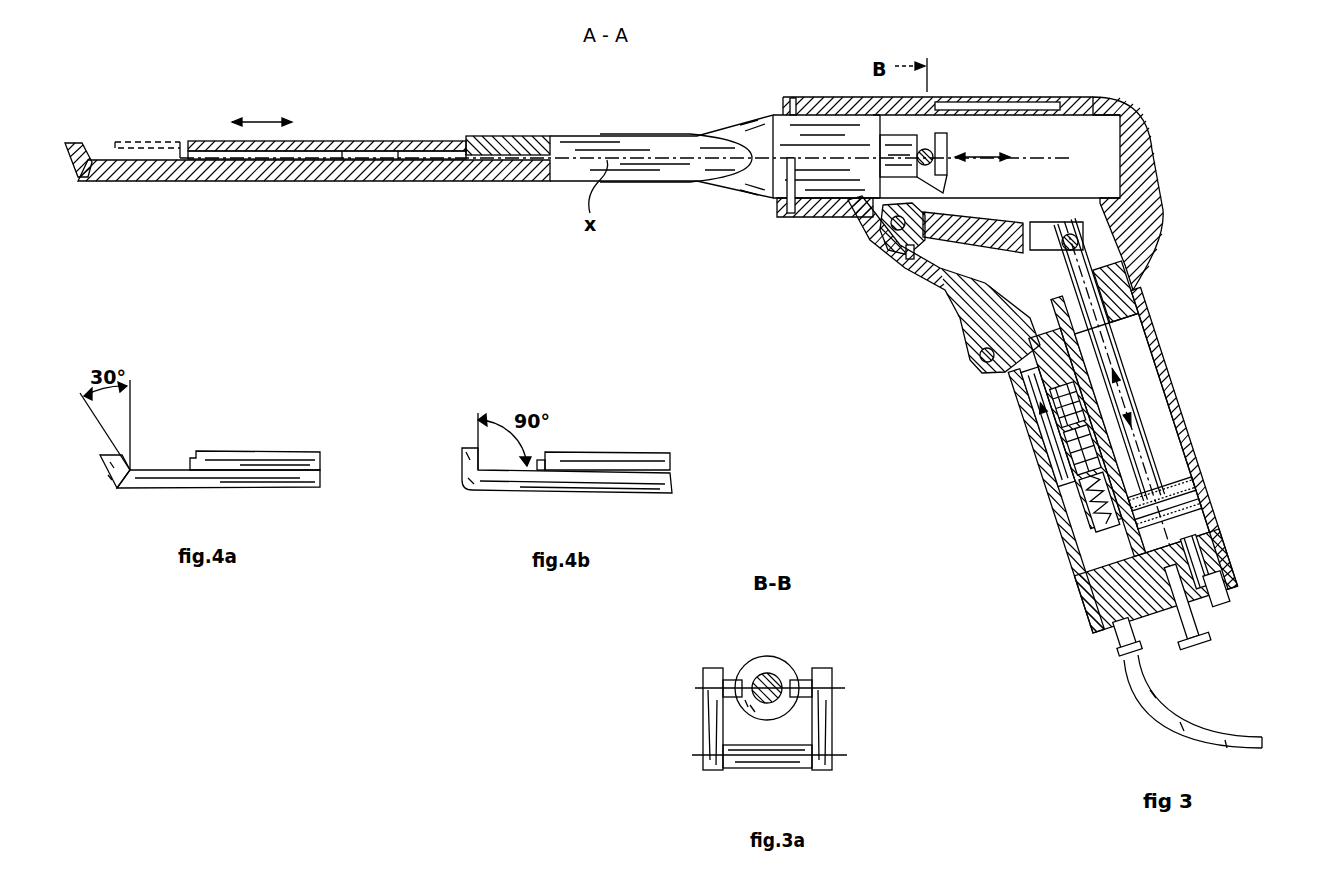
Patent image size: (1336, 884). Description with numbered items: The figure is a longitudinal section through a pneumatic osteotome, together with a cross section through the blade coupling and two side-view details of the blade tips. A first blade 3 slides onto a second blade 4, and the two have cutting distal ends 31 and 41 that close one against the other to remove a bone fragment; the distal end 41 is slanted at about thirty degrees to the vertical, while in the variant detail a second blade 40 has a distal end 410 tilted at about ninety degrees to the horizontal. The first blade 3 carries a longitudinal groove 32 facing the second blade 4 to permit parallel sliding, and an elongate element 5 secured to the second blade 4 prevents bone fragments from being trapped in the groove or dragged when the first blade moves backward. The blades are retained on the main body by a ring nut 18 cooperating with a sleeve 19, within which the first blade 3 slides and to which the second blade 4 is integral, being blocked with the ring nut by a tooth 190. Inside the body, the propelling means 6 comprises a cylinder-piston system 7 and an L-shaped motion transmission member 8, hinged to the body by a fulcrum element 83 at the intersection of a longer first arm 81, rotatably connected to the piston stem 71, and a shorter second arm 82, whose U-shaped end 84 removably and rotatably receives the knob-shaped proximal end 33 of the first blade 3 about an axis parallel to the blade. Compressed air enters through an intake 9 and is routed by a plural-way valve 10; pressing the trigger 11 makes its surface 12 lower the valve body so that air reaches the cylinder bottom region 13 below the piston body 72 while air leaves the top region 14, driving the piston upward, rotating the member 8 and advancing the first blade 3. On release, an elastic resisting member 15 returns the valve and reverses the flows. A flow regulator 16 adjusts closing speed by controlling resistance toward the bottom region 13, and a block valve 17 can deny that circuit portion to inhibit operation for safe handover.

In FIG. 3, the first blade 3 is at (519, 135).
In FIG. 3, the second blade 4 is at (125, 178).
In FIG. 3, the elongate element 5 is at (178, 152).
In FIG. 3, the propelling means 6 is at (1172, 400).
In FIG. 3, the cylinder-piston system 7 is at (1147, 377).
In FIG. 3, the motion transmission member 8 is at (1004, 215).
In FIG. 3, the intake 9 is at (1127, 653).
In FIG. 3, the plural-way valve 10 is at (1037, 483).
In FIG. 3, the operation trigger 11 is at (957, 330).
In FIG. 3, the surface of the trigger 12 is at (1013, 387).
In FIG. 3, the cylinder bottom region 13 is at (1218, 520).
In FIG. 3, the cylinder top region 14 is at (1030, 442).
In FIG. 3, the elastic resisting member 15 is at (1060, 537).
In FIG. 3, the flow regulator 16 is at (1237, 617).
In FIG. 3, the block valve 17 is at (1213, 647).
In FIG. 3, the ring nut 18 is at (797, 97).
In FIG. 3, the sleeve 19 is at (750, 181).
In FIG. 4A, the cutting distal end of the first blade 31 is at (222, 460).
In FIG. 3, the longitudinal groove 32 is at (397, 152).
In FIG. 3, the knob-shaped proximal end 33 is at (933, 150).
In FIG. 3A, the knob-shaped proximal end 33 is at (777, 657).
In FIG. 4B, the second blade 40 is at (515, 483).
In FIG. 4A, the cutting distal end of the second blade 41 is at (107, 475).
In FIG. 3, the stem 71 is at (1122, 337).
In FIG. 3, the piston body 72 is at (1195, 485).
In FIG. 3, the first arm 81 is at (1035, 238).
In FIG. 3, the second arm 82 is at (938, 188).
In FIG. 3A, the second arm 82 is at (832, 710).
In FIG. 3, the fulcrum element 83 is at (880, 255).
In FIG. 3, the U-shaped end 84 is at (938, 134).
In FIG. 3A, the U-shaped end 84 is at (715, 668).
In FIG. 3, the tooth 190 is at (812, 213).
In FIG. 4B, the distal end of the variant second blade 410 is at (470, 450).